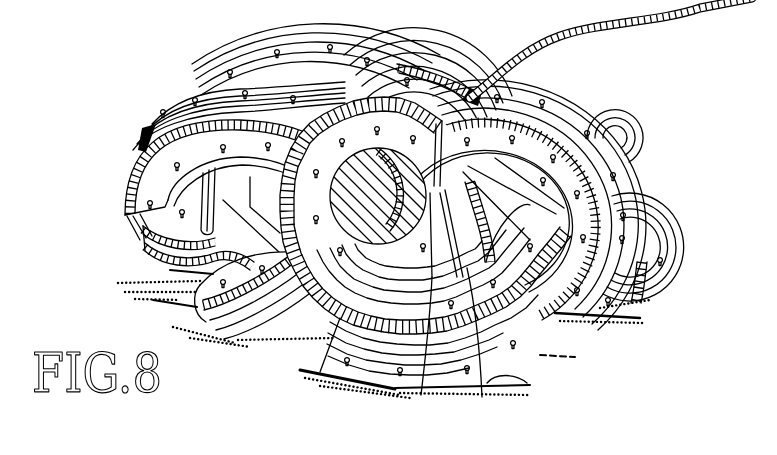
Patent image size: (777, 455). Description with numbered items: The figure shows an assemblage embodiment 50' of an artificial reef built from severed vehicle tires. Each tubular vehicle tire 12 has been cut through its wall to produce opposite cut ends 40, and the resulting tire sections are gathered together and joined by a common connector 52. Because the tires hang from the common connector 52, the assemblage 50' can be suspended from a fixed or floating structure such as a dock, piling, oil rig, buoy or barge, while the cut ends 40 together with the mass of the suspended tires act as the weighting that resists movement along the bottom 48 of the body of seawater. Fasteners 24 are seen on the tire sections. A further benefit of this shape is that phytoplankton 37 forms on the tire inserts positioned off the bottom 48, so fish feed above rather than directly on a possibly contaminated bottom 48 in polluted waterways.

The assemblage embodiment 50' is at (405, 218).
The tubular vehicle tire 12 is at (182, 105).
The fastener 24 is at (628, 238).
The phytoplankton 37 is at (455, 306).
The cut ends 40 is at (143, 258).
The bottom 48 is at (520, 387).
The common connector 52 is at (654, 29).